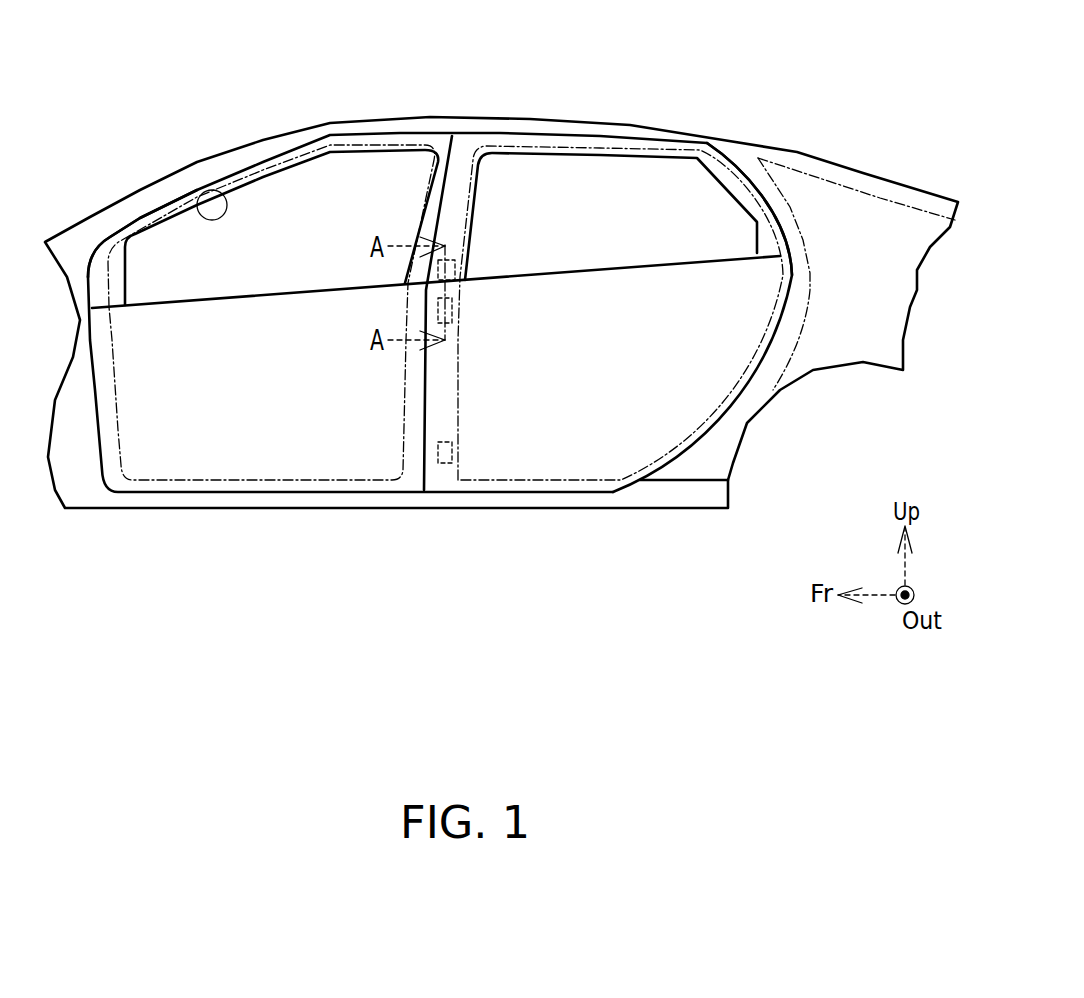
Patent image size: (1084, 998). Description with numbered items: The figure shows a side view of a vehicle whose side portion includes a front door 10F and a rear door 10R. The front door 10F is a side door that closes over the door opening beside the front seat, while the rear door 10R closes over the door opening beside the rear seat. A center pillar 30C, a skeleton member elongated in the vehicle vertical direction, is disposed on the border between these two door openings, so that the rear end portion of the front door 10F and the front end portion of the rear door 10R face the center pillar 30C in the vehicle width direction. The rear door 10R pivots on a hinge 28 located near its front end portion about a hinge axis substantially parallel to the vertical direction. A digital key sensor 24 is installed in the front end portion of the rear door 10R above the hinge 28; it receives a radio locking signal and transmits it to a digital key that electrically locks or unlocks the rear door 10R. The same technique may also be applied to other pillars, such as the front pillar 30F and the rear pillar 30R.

The front door 10F is at (290, 364).
The rear door 10R is at (640, 356).
The front pillar 30F is at (227, 200).
The center pillar 30C is at (405, 378).
The rear pillar 30R is at (782, 192).
The digital key sensor 24 is at (455, 270).
The hinge 28 is at (453, 313).